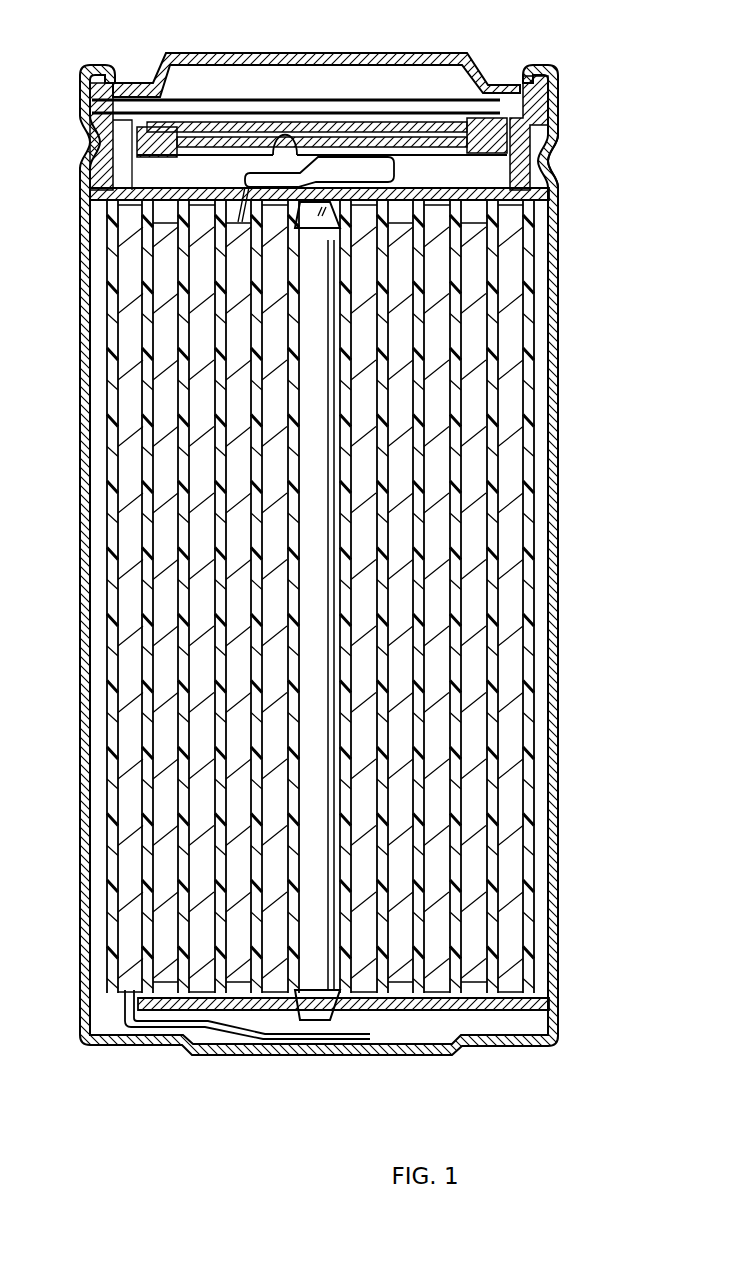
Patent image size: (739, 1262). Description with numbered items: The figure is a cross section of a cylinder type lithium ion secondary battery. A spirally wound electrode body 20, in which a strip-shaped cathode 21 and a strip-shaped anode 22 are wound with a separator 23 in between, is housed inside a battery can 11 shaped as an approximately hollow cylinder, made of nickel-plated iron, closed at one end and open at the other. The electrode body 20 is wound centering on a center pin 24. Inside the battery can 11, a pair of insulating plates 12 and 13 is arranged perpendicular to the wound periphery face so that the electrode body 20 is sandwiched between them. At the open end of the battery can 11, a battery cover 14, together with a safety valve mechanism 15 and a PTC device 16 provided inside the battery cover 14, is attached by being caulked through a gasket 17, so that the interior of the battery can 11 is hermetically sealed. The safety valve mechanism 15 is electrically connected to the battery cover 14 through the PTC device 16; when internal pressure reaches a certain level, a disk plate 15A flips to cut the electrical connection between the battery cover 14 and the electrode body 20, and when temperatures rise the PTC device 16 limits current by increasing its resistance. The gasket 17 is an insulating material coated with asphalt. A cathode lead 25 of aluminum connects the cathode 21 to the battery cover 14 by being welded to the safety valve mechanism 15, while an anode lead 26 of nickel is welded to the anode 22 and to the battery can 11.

The battery can 11 is at (562, 253).
The insulating plate 12 is at (550, 198).
The insulating plate 13 is at (548, 1003).
The battery cover 14 is at (286, 53).
The safety valve mechanism 15 is at (437, 103).
The disk plate 15A is at (395, 125).
The PTC device 16 is at (556, 104).
The gasket 17 is at (566, 163).
The spirally wound electrode body 20 is at (360, 610).
The cathode 21 is at (483, 440).
The anode 22 is at (513, 490).
The separator 23 is at (493, 568).
The center pin 24 is at (310, 613).
The cathode lead 25 is at (300, 150).
The anode lead 26 is at (219, 1042).